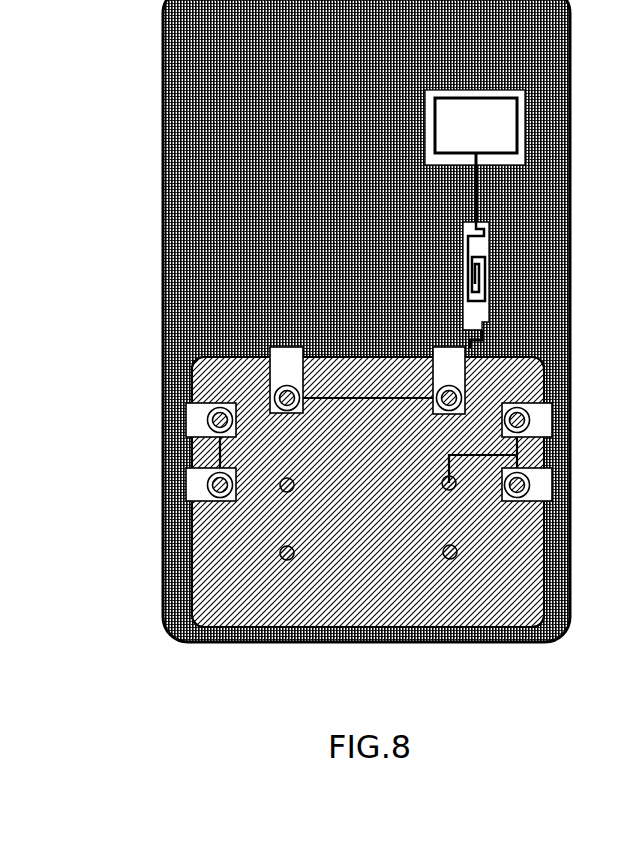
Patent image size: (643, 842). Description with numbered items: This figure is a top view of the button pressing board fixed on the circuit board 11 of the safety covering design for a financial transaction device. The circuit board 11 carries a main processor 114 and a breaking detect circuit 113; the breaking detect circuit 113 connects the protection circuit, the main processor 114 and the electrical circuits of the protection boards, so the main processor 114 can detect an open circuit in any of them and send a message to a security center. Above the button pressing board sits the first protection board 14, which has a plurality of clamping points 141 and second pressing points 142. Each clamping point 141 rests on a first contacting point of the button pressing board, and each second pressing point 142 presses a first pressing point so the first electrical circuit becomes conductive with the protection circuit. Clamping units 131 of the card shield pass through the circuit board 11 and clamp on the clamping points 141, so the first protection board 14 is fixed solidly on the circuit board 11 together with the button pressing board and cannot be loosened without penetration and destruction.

The circuit board 11 is at (163, 42).
The main processor 114 is at (510, 137).
The breaking detect circuit 113 is at (490, 308).
The first protection board 14 is at (192, 365).
The clamping unit 131 is at (186, 420).
The clamping point 141 is at (186, 440).
The second pressing point 142 is at (200, 575).